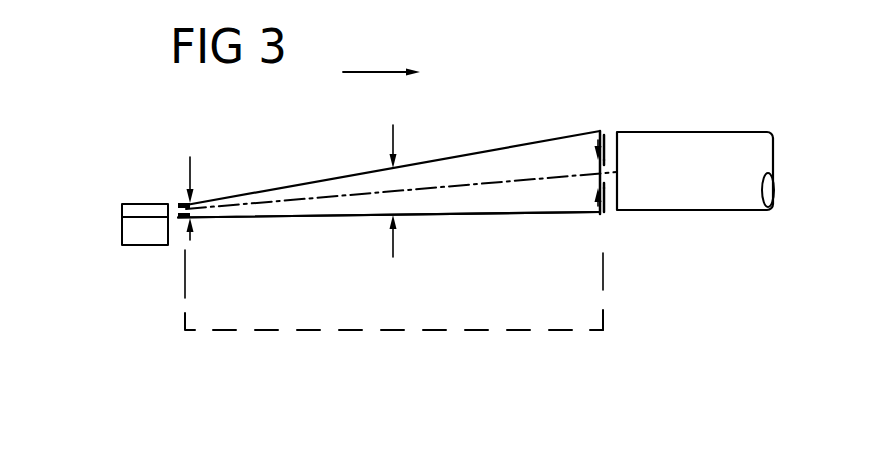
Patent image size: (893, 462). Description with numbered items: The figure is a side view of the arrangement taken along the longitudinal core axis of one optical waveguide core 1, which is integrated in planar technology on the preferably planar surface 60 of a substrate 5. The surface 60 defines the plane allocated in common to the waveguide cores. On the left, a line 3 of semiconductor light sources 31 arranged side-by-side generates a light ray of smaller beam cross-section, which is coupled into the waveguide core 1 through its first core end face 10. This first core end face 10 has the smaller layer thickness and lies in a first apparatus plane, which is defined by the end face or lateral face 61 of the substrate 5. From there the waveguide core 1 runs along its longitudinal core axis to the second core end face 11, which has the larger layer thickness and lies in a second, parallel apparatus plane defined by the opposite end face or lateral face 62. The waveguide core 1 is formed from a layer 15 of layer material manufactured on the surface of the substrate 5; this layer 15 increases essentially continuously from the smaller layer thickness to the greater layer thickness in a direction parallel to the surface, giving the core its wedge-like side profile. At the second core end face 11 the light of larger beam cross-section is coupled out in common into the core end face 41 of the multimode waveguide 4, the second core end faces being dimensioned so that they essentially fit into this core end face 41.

The optical waveguide core 1 is at (433, 146).
The line of semiconductor light sources 3 is at (107, 212).
The multimode waveguide 4 is at (744, 224).
The substrate 5 is at (565, 330).
The first core end face 10 is at (179, 204).
The second core end face 11 is at (604, 193).
The layer 15 is at (461, 156).
The semiconductor light source 31 is at (139, 209).
The core end face of the multimode waveguide core 41 is at (607, 141).
The planar surface 60 is at (298, 217).
The end face or lateral face 61 is at (174, 280).
The end face or lateral face 62 is at (617, 284).